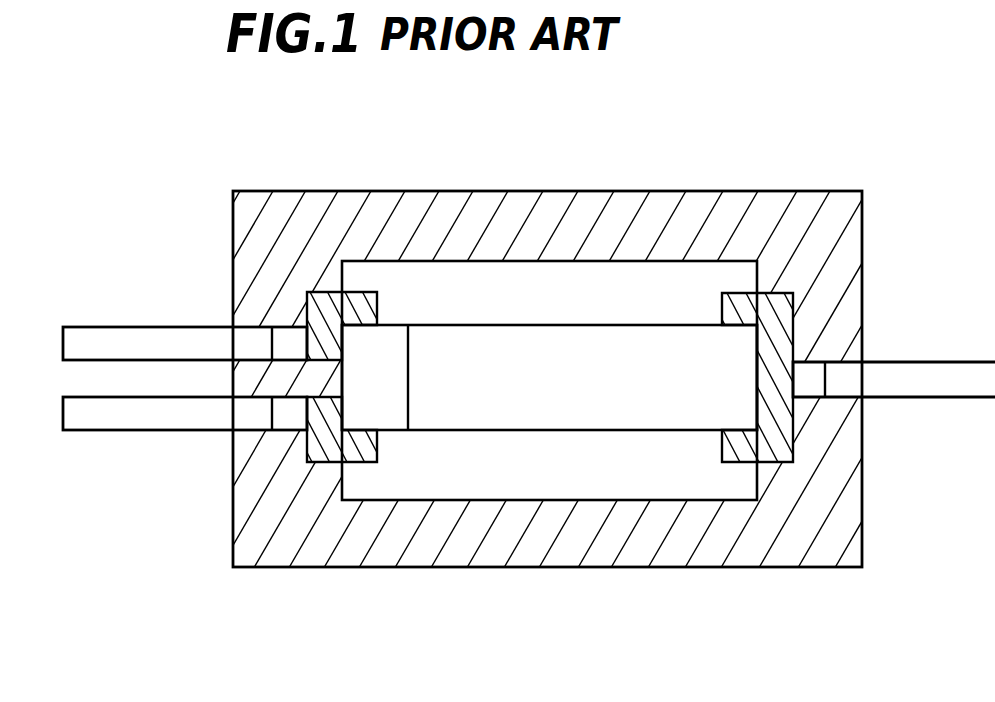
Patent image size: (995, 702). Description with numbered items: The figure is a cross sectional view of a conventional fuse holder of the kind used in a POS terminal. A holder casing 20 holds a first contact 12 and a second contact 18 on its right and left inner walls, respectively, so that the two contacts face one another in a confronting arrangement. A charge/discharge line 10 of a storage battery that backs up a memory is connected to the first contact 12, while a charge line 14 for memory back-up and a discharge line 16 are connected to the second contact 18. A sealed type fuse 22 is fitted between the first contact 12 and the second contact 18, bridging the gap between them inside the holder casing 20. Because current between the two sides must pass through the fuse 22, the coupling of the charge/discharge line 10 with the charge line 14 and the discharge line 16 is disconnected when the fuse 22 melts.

The charge/discharge line 10 is at (940, 362).
The first contact 12 is at (721, 444).
The charge line 14 is at (131, 327).
The discharge line 16 is at (113, 432).
The second contact 18 is at (378, 300).
The holder casing 20 is at (719, 574).
The sealed type fuse 22 is at (509, 325).